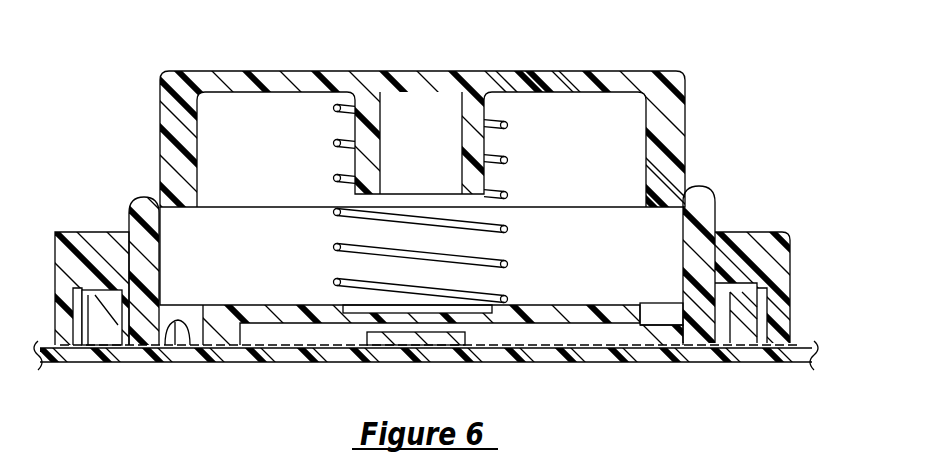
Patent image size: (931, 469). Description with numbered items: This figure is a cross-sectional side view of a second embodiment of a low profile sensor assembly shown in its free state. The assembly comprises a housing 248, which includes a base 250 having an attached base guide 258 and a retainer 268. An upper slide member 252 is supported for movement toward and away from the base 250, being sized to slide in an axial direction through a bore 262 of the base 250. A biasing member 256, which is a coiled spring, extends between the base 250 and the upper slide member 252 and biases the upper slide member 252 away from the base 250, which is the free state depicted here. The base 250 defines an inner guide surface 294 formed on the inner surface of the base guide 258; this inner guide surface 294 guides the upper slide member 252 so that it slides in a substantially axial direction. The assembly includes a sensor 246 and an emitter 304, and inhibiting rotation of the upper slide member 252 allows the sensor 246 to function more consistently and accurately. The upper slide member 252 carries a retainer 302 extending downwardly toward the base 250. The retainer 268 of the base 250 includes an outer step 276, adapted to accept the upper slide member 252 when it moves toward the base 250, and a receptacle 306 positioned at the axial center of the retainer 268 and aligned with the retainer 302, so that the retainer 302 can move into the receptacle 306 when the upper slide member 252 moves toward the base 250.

The sensor 246 is at (430, 332).
The housing 248 is at (685, 133).
The base 250 is at (133, 213).
The upper slide member 252 is at (572, 80).
The biasing member 256 is at (342, 143).
The base guide 258 is at (706, 218).
The bore 262 is at (160, 198).
The retainer 268 is at (626, 323).
The outer step 276 is at (180, 325).
The inner guide surface 294 is at (708, 220).
The retainer 302 is at (381, 110).
The emitter 304 is at (445, 107).
The receptacle 306 is at (345, 292).